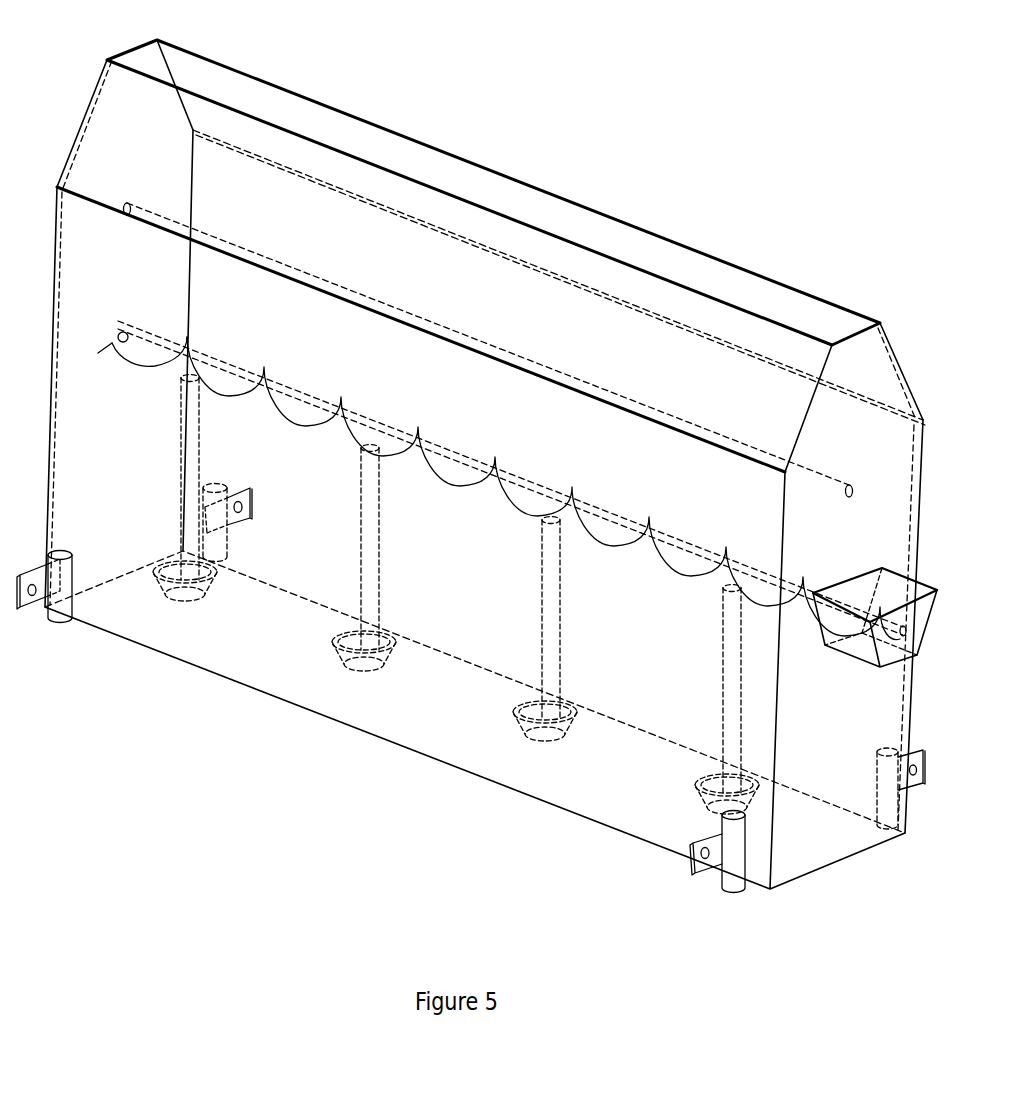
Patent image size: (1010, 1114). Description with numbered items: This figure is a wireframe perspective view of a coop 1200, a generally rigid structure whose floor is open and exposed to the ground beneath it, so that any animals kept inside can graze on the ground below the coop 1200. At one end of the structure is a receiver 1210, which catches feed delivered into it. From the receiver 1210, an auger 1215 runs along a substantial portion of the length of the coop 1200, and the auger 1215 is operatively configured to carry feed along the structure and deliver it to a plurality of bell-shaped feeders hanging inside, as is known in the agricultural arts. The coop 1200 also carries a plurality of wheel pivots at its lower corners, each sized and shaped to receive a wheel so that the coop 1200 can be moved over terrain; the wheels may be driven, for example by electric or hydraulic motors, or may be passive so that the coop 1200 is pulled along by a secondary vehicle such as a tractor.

The coop 1200 is at (485, 464).
The auger 1215 is at (665, 535).
The receiver 1210 is at (907, 607).